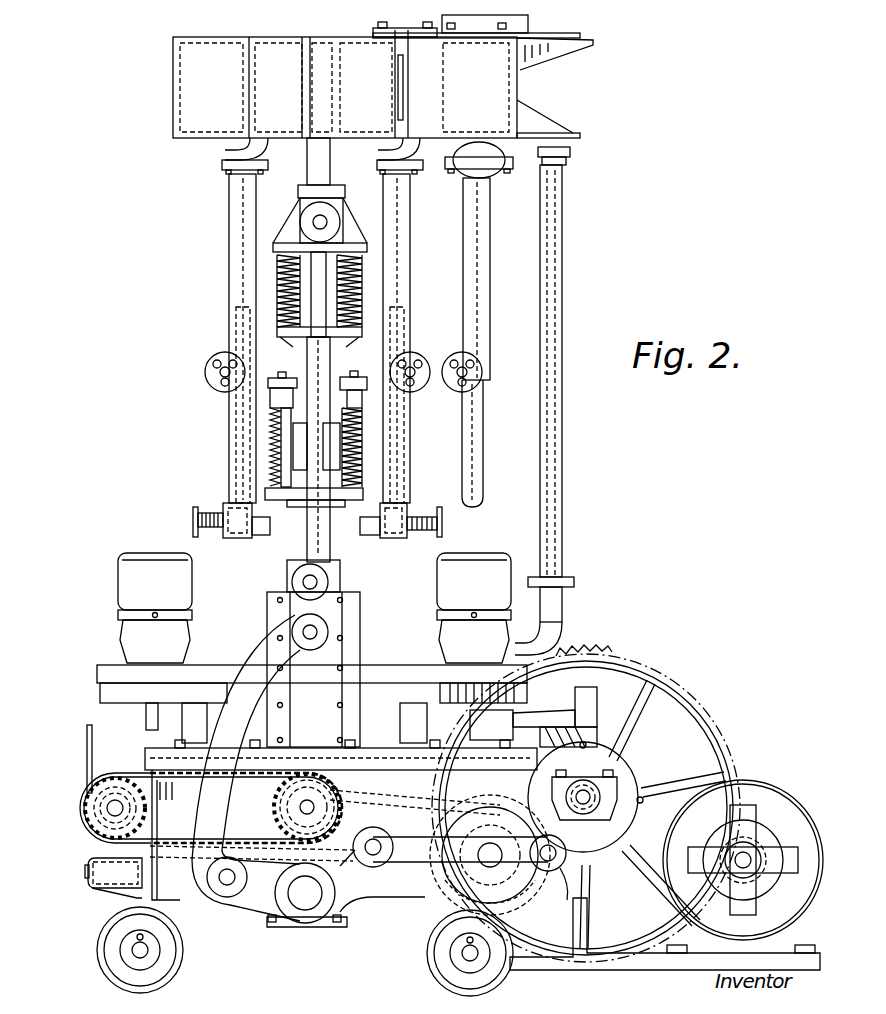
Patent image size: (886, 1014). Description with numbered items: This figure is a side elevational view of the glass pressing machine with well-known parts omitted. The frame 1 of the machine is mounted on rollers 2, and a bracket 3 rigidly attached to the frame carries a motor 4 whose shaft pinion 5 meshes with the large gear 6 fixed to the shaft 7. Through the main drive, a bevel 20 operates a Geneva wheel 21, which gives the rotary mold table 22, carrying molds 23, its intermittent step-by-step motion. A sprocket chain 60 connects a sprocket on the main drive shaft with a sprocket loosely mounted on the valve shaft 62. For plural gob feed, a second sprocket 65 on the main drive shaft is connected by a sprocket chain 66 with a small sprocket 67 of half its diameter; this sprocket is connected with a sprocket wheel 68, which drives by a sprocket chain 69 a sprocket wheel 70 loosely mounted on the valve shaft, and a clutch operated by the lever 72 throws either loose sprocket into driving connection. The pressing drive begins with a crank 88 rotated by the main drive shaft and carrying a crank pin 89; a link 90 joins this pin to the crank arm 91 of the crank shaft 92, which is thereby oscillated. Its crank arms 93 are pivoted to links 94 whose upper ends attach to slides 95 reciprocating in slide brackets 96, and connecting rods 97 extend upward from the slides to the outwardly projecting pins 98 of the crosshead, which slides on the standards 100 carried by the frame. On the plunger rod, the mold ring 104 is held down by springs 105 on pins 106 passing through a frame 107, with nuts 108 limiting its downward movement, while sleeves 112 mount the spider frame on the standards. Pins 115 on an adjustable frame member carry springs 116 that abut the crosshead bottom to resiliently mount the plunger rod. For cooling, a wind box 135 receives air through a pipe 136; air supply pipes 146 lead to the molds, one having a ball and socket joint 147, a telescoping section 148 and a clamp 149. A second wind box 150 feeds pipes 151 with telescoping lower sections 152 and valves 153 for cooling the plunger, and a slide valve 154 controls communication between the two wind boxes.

The frame 1 is at (183, 887).
The rollers 2 is at (428, 960).
The bracket 3 is at (597, 965).
The motor 4 is at (749, 793).
The pinion 5 is at (757, 843).
The large gear 6 is at (605, 655).
The shaft 7 is at (612, 796).
The bevel 20 is at (540, 812).
The Geneva wheel 21 is at (600, 720).
The rotary mold table 22 is at (190, 675).
The molds 23 is at (120, 573).
The sprocket chain 60 is at (289, 848).
The shaft 62 is at (92, 840).
The second sprocket 65 is at (445, 836).
The sprocket chain 66 is at (358, 838).
The sprocket 67 is at (368, 838).
The sprocket wheel 68 is at (276, 806).
The sprocket chain 69 is at (257, 841).
The sprocket wheel 70 is at (112, 810).
The lever 72 is at (86, 747).
The crank 88 is at (522, 887).
The crank pin 89 is at (552, 858).
The link 90 is at (425, 855).
The crank arm 91 is at (355, 880).
The crank shaft 92 is at (303, 897).
The crank arms 93 is at (255, 903).
The links 94 is at (258, 650).
The slides 95 is at (325, 658).
The slide brackets 96 is at (348, 618).
The connecting rods 97 is at (318, 525).
The pins 98 is at (330, 218).
The standards 100 is at (332, 352).
The mold ring 104 is at (363, 498).
The springs 105 is at (362, 438).
The pins 106 is at (276, 445).
The frame 107 is at (265, 385).
The nuts 108 is at (277, 366).
The sleeves 112 is at (278, 420).
The pins 115 is at (282, 288).
The springs 116 is at (280, 262).
The wind box 135 is at (500, 106).
The pipe 136 is at (528, 26).
The air supply pipes 146 is at (487, 283).
The ball and socket joint 147 is at (507, 178).
The telescoping section 148 is at (484, 480).
The clamp 149 is at (208, 374).
The wind box 150 is at (265, 110).
The pipes 151 is at (230, 322).
The telescoping lower sections 152 is at (232, 470).
The valves 153 is at (200, 512).
The slide valve 154 is at (410, 86).